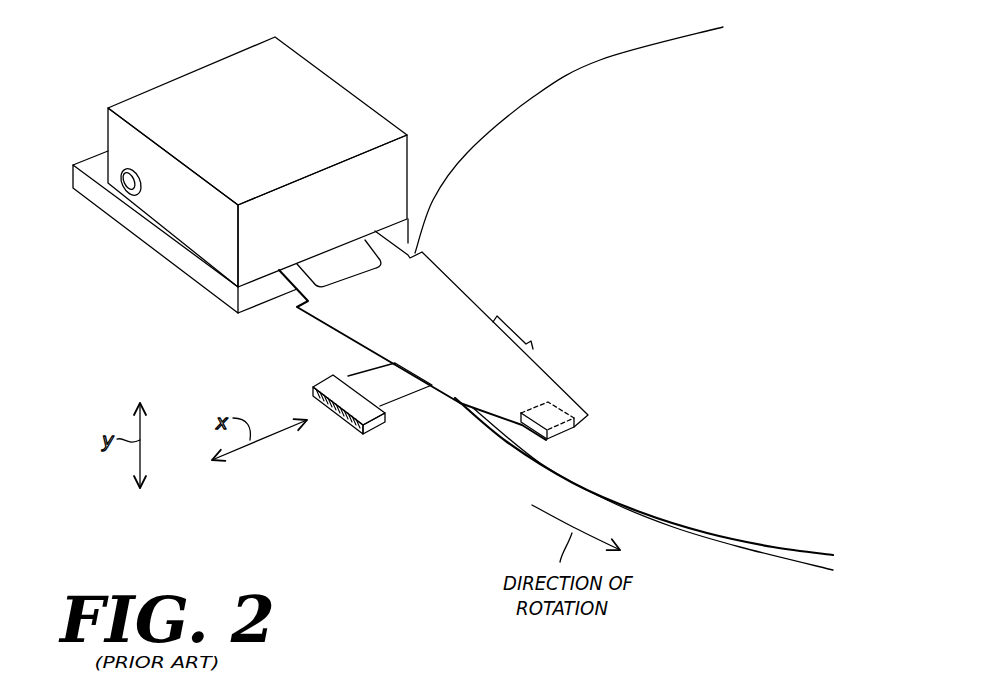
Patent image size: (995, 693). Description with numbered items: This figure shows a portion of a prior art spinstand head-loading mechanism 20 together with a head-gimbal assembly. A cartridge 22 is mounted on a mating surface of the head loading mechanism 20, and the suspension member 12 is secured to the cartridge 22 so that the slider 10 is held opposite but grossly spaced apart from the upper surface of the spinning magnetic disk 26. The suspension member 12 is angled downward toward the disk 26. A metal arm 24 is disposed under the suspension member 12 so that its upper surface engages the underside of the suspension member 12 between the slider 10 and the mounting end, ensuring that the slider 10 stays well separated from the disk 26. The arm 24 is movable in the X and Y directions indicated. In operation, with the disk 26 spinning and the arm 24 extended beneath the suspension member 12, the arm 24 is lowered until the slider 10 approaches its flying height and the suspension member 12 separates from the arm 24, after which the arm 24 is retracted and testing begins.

The slider 10 is at (575, 442).
The suspension member 12 is at (415, 302).
The head loading mechanism 20 is at (135, 225).
The cartridge 22 is at (347, 118).
The metal arm 24 is at (377, 383).
The spinning magnetic disk 26 is at (548, 143).